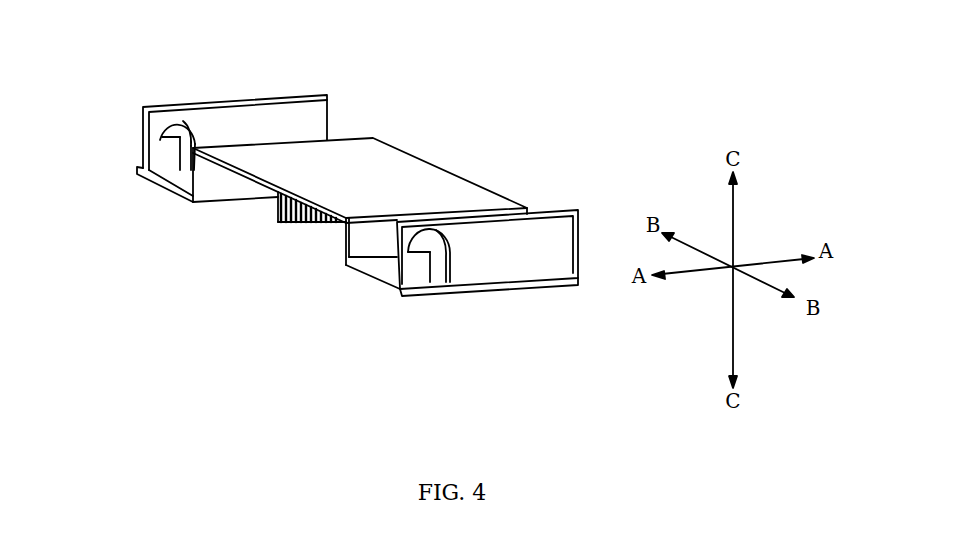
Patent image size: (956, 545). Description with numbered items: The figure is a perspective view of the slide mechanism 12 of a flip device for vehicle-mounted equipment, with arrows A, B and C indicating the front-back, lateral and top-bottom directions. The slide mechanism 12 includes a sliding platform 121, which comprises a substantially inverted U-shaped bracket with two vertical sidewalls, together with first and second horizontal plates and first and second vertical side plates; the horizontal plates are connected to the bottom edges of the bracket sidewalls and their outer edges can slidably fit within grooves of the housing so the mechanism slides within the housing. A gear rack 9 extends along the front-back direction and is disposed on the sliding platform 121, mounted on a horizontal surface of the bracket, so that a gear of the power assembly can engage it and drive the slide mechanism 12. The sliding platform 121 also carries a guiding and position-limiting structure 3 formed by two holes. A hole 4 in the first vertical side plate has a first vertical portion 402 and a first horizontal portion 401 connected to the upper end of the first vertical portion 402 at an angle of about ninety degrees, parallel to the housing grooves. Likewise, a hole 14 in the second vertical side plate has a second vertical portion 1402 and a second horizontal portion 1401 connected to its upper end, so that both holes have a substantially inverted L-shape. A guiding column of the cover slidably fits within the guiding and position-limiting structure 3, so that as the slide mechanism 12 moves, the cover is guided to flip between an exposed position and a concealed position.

The guiding and position-limiting structure 3 is at (245, 218).
The hole 4 is at (190, 152).
The first horizontal portion 401 is at (167, 134).
The first vertical portion 402 is at (182, 160).
The gear rack 9 is at (280, 211).
The slide mechanism 12 is at (345, 178).
The sliding platform 121 is at (363, 237).
The hole 14 is at (403, 317).
The second horizontal portion 1401 is at (374, 276).
The second vertical portion 1402 is at (440, 268).